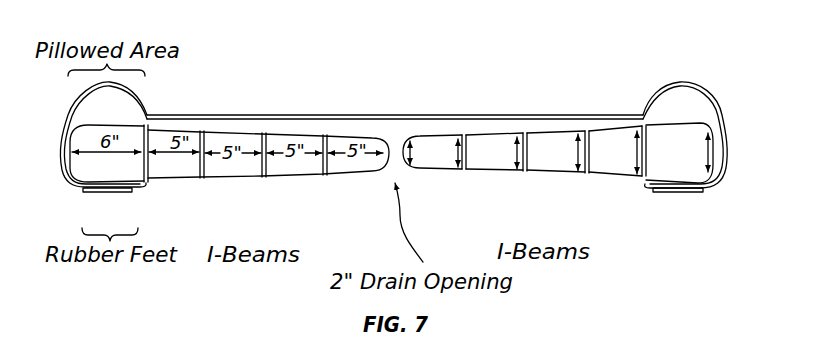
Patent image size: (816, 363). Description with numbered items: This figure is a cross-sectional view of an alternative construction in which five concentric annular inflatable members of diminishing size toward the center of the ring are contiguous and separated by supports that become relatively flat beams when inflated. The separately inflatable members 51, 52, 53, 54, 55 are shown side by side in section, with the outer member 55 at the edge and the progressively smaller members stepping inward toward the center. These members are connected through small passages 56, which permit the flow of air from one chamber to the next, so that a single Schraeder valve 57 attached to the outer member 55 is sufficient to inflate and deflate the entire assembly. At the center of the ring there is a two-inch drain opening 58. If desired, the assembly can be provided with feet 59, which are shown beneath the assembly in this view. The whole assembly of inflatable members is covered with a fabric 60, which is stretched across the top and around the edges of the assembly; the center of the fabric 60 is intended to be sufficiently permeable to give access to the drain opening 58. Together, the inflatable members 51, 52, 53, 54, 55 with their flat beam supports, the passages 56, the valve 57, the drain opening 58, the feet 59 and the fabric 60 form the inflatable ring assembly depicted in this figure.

The separately inflatable member 51 is at (438, 135).
The separately inflatable member 52 is at (497, 135).
The separately inflatable member 53 is at (553, 132).
The separately inflatable member 54 is at (610, 132).
The separately inflatable member 55 is at (722, 142).
The small passages 56 is at (149, 163).
The Schraeder valve 57 is at (729, 172).
The drain opening 58 is at (393, 126).
The feet 59 is at (107, 194).
The fabric 60 is at (278, 115).